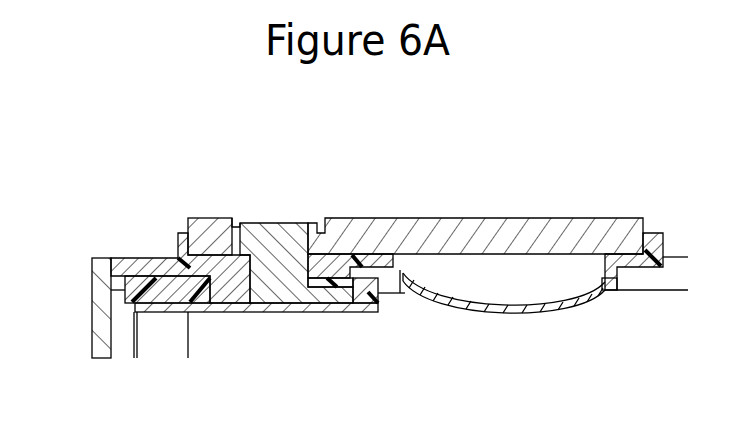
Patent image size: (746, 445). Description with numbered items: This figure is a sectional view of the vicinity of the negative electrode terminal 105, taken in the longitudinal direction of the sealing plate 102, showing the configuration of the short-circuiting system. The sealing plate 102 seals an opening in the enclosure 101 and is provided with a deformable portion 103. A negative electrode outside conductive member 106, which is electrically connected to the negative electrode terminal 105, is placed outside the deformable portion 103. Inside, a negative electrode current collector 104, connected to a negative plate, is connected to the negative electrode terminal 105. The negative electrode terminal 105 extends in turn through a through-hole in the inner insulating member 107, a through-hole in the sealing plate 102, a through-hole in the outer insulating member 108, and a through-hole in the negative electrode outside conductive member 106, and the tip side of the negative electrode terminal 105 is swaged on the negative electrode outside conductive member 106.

The enclosure 101 is at (103, 331).
The sealing plate 102 is at (147, 268).
The deformable portion 103 is at (518, 305).
The negative electrode current collector 104 is at (234, 312).
The negative electrode terminal 105 is at (277, 255).
The negative electrode outside conductive member 106 is at (433, 228).
The inner insulating member 107 is at (125, 297).
The outer insulating member 108 is at (180, 256).